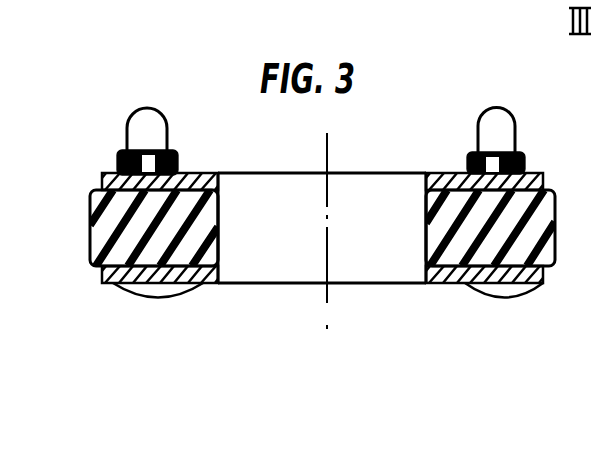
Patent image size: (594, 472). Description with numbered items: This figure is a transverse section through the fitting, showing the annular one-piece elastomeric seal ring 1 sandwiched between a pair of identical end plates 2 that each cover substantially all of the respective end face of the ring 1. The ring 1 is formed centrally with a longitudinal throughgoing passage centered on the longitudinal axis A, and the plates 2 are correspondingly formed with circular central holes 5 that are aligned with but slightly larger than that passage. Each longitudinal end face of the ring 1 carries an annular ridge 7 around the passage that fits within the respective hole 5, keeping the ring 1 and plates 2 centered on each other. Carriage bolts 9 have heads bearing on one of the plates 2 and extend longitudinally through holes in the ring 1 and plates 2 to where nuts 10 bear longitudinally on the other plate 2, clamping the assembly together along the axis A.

The elastomeric seal ring 1 is at (557, 220).
The end plates 2 is at (103, 173).
The circular central holes 5 is at (218, 176).
The annular ridge 7 is at (232, 173).
The carriage bolts 9 is at (140, 296).
The nuts 10 is at (157, 125).
The longitudinal axis A is at (327, 158).